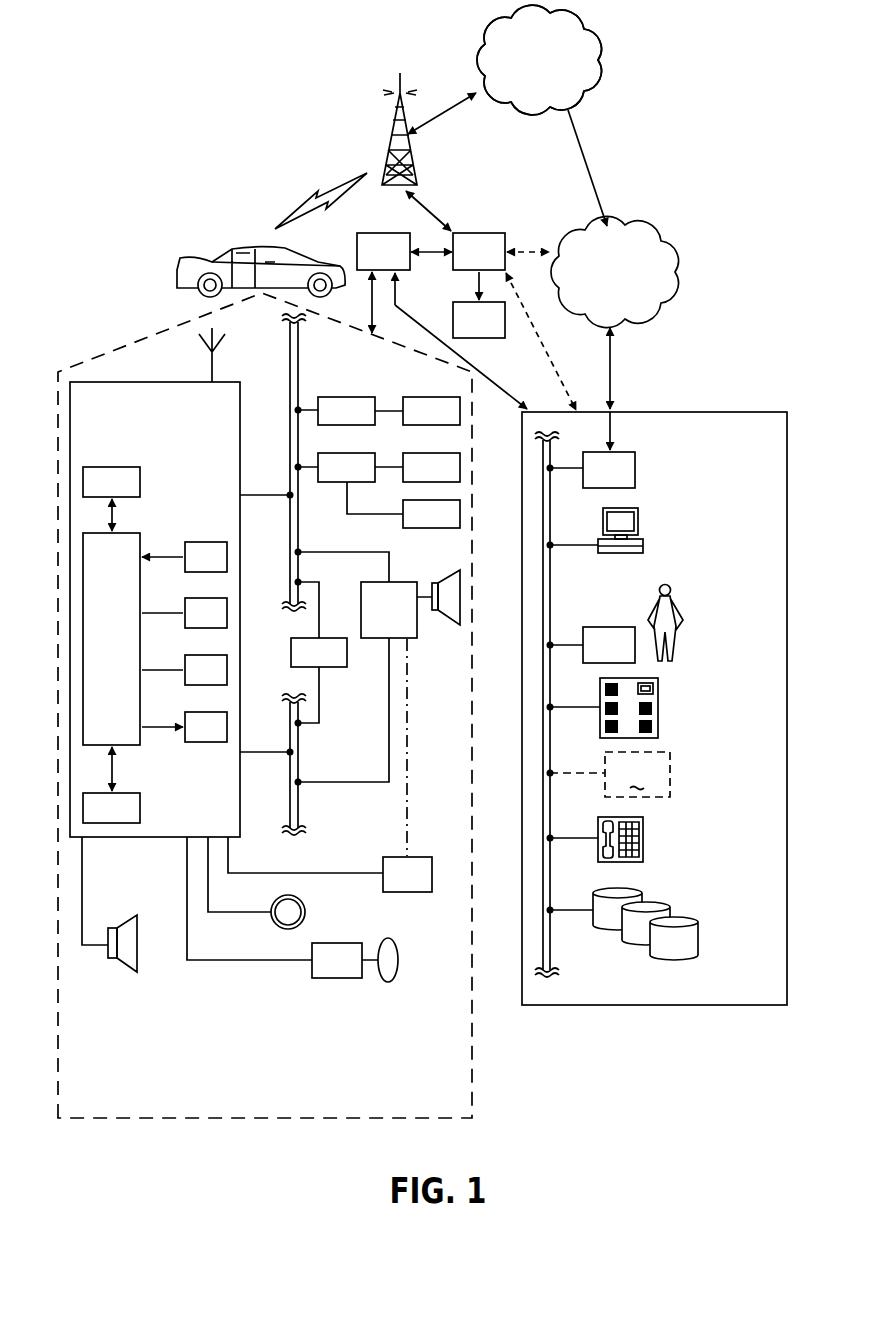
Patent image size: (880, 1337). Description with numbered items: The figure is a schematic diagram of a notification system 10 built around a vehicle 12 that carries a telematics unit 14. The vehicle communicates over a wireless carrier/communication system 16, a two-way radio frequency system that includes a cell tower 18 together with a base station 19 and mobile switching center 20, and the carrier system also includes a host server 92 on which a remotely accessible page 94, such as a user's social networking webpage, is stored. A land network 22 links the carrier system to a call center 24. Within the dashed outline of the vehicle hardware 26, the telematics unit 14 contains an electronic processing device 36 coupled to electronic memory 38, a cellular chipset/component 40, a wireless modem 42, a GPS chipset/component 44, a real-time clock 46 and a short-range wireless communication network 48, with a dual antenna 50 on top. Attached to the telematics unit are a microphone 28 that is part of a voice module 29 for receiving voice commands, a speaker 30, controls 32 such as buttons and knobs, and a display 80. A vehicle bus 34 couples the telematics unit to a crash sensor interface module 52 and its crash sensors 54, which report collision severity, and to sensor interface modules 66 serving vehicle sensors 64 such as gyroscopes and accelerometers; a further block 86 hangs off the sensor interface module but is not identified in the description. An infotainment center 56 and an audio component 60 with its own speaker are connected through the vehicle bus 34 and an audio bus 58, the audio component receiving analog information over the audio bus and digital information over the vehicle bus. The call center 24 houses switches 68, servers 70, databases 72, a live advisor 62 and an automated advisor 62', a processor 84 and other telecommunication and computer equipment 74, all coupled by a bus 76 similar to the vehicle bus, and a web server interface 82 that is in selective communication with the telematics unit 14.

The notification system 10 is at (684, 107).
The vehicle 12 is at (261, 245).
The telematics unit 14 is at (240, 587).
The wireless carrier/communication system 16 is at (473, 123).
The cell tower 18 is at (392, 128).
The base station 19 is at (518, 72).
The mobile switching center 20 is at (539, 60).
The land network 22 is at (606, 285).
The call center 24 is at (653, 1005).
The vehicle hardware 26 is at (252, 1118).
The microphone 28 is at (399, 960).
The voice module 29 is at (330, 974).
The speaker 30 is at (128, 972).
The controls 32 is at (305, 912).
The vehicle bus 34 is at (299, 536).
The electronic processing device 36 is at (105, 649).
The electronic memory 38 is at (105, 822).
The cellular chipset/component 40 is at (105, 496).
The wireless modem 42 is at (199, 571).
The GPS chipset/component 44 is at (199, 627).
The real-time clock 46 is at (199, 684).
The short-range wireless communication network 48 is at (199, 741).
The dual antenna 50 is at (212, 372).
The crash and/or collision sensor interface module 52 is at (340, 425).
The crash sensors 54 is at (425, 425).
The infotainment center 56 is at (312, 666).
The audio bus 58 is at (290, 770).
The audio component 60 is at (382, 624).
The live advisor 62 is at (688, 609).
The automated advisor 62' is at (661, 518).
The vehicle sensors 64 is at (425, 481).
The sensor interface modules 66 is at (340, 481).
The switches 68 is at (602, 484).
The servers 70 is at (660, 705).
The databases 72 is at (698, 937).
The telecommunication and computer equipment 74 is at (645, 838).
The bus 76 is at (550, 938).
The display 80 is at (401, 888).
The web server interface 82 is at (377, 265).
The processor 84 is at (602, 659).
The sensor 86 is at (425, 528).
The host server 92 is at (472, 265).
The remotely accessible page 94 is at (472, 334).